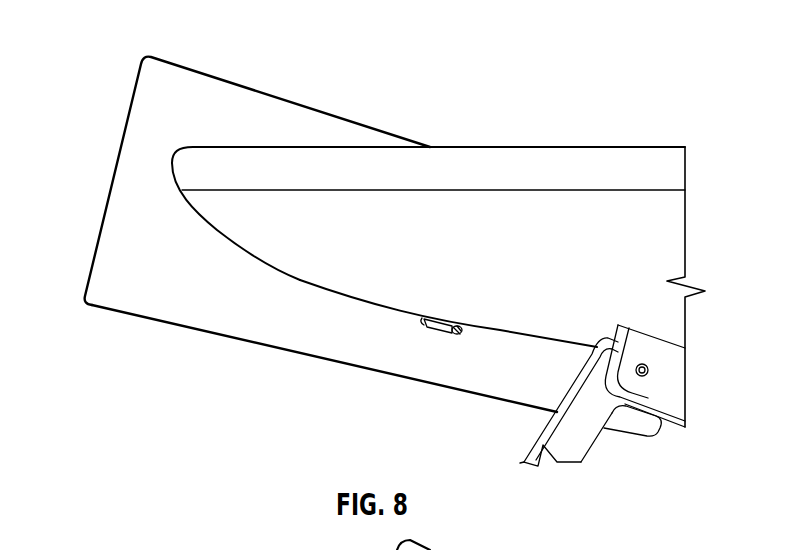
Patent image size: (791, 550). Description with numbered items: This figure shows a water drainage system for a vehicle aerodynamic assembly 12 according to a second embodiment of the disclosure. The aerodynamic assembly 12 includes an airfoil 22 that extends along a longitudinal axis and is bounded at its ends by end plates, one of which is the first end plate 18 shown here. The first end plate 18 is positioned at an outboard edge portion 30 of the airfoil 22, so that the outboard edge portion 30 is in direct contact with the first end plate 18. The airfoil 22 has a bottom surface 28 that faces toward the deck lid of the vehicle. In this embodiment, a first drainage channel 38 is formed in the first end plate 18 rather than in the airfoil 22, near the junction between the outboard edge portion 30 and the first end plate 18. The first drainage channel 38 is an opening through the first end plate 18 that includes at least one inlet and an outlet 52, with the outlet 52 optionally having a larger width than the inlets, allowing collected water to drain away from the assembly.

The aerodynamic assembly 12 is at (480, 110).
The first end plate 18 is at (203, 97).
The airfoil 22 is at (528, 163).
The bottom surface 28 is at (315, 277).
The outboard edge portion 30 is at (235, 253).
The first drainage channel 38 is at (421, 335).
The outlet 52 is at (454, 332).